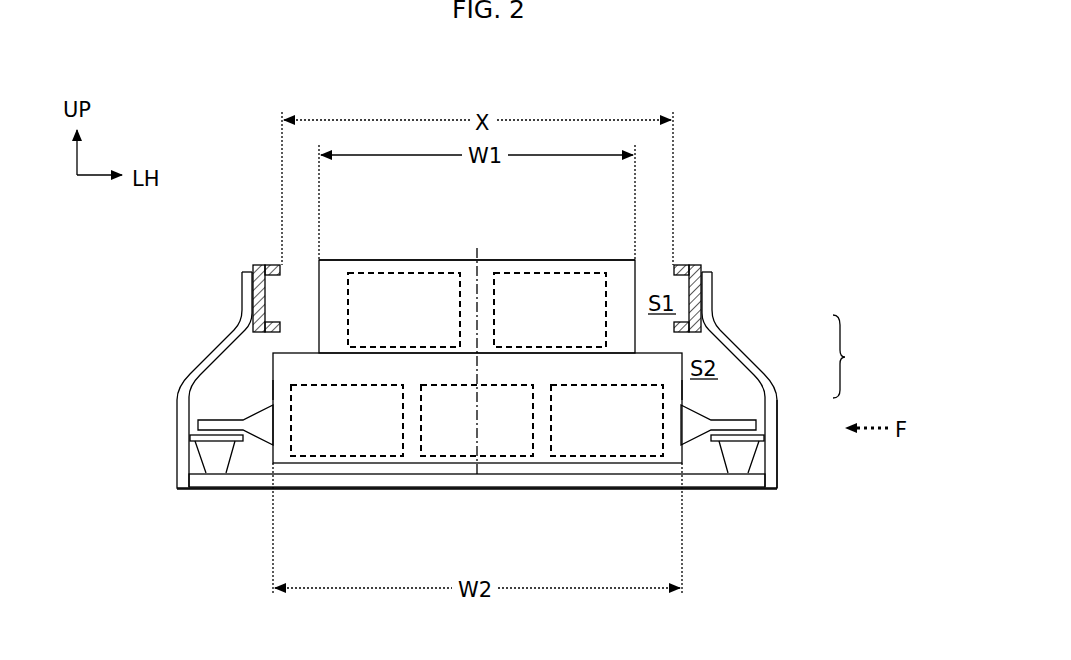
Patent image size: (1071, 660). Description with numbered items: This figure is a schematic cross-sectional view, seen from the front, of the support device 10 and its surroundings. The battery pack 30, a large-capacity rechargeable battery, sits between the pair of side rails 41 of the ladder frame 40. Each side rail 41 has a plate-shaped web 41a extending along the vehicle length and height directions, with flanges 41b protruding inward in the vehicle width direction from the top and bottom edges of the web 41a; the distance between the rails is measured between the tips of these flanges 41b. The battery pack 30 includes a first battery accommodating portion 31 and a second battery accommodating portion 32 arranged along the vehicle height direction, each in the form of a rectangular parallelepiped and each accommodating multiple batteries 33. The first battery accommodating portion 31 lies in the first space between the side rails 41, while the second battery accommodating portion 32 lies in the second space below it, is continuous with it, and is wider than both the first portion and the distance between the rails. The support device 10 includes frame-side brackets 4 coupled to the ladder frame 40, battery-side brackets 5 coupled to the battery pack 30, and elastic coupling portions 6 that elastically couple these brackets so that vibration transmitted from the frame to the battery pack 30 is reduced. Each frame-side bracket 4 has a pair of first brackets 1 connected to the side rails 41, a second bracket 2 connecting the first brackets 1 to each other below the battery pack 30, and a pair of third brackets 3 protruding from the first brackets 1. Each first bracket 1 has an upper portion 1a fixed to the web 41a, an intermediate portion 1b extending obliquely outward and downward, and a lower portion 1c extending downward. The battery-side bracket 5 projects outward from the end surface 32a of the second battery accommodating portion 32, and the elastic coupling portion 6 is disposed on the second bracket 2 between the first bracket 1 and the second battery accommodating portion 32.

The first bracket 1 is at (170, 378).
The upper portion 1a is at (715, 295).
The intermediate portion 1b is at (740, 350).
The lower portion 1c is at (778, 422).
The second bracket 2 is at (467, 491).
The third bracket 3 is at (218, 442).
The frame-side bracket 4 is at (194, 511).
The battery-side bracket 5 is at (258, 448).
The elastic coupling portion 6 is at (220, 465).
The support device 10 is at (777, 224).
The battery pack 30 is at (493, 241).
The first battery accommodating portion 31 is at (449, 260).
The second battery accommodating portion 32 is at (417, 464).
The end surface 32a is at (274, 388).
The battery 33 is at (403, 272).
The ladder frame 40 is at (452, 263).
The side rail 41 is at (250, 255).
The web 41a is at (253, 293).
The flange 41b is at (276, 266).